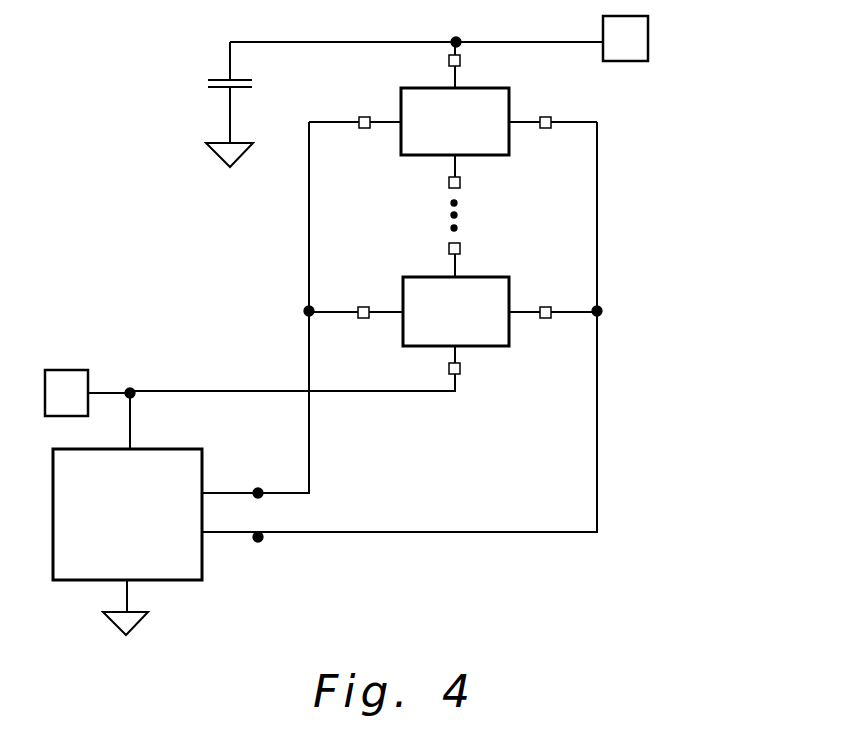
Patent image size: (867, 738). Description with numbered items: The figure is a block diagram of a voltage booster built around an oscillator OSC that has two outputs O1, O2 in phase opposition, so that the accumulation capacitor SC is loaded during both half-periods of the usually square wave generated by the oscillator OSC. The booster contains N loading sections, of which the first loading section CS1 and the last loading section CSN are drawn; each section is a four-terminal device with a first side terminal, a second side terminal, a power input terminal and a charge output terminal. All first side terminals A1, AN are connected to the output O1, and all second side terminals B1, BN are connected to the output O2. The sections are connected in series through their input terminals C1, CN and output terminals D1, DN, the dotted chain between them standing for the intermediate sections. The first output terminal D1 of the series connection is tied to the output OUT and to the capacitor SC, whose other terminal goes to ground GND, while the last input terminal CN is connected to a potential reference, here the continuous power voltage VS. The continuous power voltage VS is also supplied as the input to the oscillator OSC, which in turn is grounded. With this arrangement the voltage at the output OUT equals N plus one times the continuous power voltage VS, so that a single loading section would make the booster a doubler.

The output OUT is at (637, 55).
The accumulation capacitor SC is at (213, 92).
The ground GND is at (178, 389).
The first loading section CS1 is at (428, 97).
The last loading section CSN is at (426, 288).
The charge output terminal of first loading section D1 is at (476, 65).
The first side terminal of first loading section A1 is at (355, 137).
The second side terminal of first loading section B1 is at (553, 136).
The power input terminal of first loading section C1 is at (475, 172).
The charge output terminal of last loading section DN is at (476, 260).
The first side terminal of last loading section AN is at (356, 328).
The second side terminal of last loading section BN is at (553, 327).
The power input terminal of last loading section CN is at (475, 364).
The continuous power voltage VS is at (90, 393).
The oscillator OSC is at (135, 471).
The first oscillator output O1 is at (262, 475).
The second oscillator output O2 is at (262, 552).